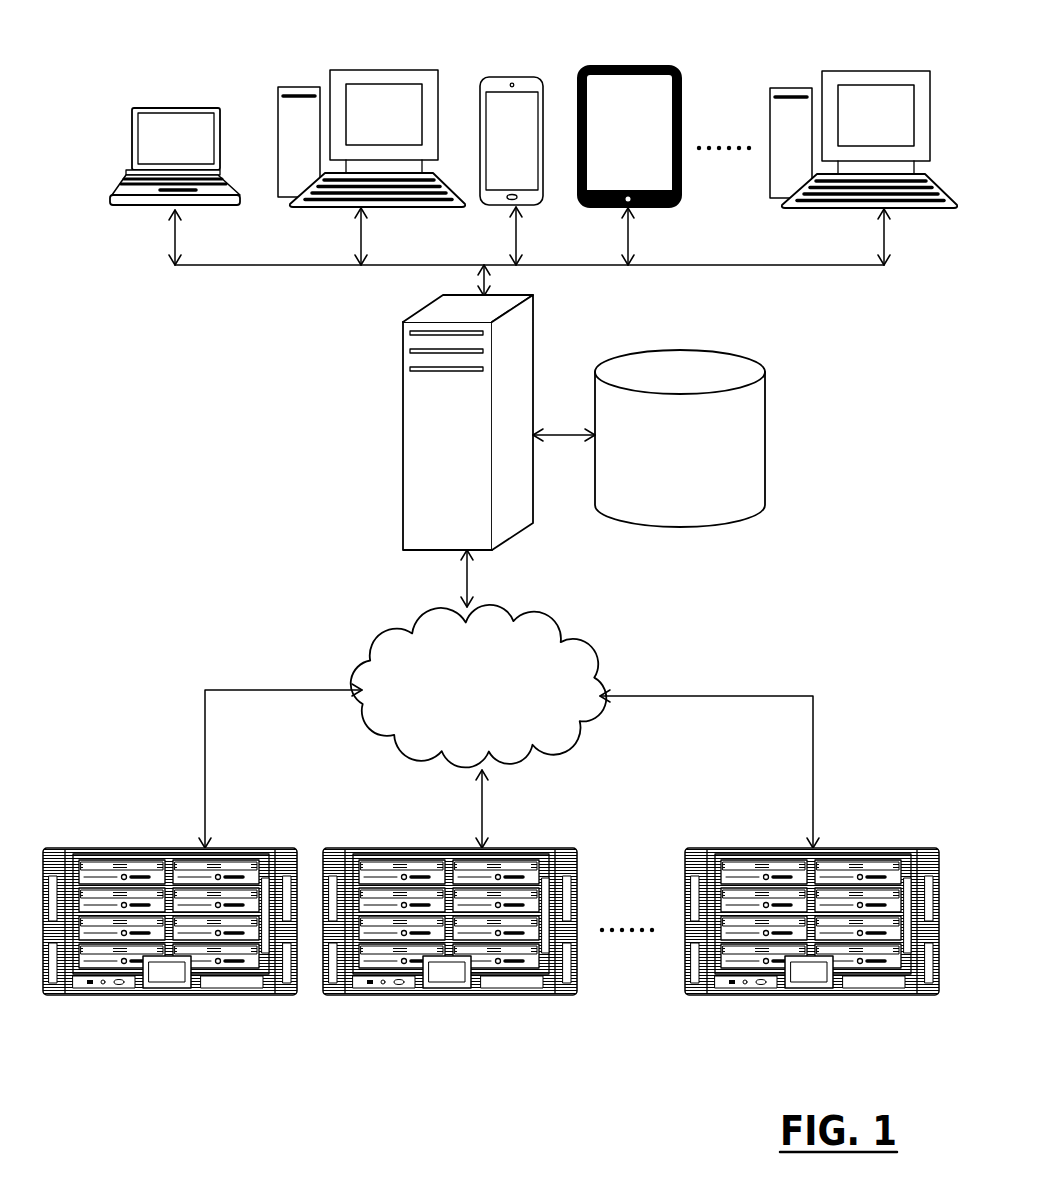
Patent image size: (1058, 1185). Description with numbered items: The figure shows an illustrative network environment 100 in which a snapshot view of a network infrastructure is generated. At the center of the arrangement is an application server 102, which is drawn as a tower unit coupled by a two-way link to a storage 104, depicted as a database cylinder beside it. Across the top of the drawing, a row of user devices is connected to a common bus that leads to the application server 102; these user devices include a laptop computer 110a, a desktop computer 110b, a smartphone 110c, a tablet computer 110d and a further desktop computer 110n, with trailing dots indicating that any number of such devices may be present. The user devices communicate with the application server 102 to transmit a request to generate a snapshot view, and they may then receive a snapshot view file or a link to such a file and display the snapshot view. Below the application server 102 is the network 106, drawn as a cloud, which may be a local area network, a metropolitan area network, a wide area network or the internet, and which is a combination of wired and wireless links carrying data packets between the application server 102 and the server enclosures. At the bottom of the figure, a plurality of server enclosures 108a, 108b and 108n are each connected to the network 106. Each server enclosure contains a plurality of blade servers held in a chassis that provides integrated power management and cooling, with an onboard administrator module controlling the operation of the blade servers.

The network environment 100 is at (513, 1118).
The application server 102 is at (463, 514).
The storage 104 is at (702, 461).
The network 106 is at (502, 703).
The server enclosure 108a is at (115, 990).
The server enclosure 108b is at (366, 990).
The server enclosure 108n is at (743, 985).
The laptop computer 110a is at (150, 136).
The desktop computer 110b is at (392, 88).
The smartphone 110c is at (504, 92).
The tablet computer 110d is at (624, 87).
The desktop computer 110n is at (863, 93).